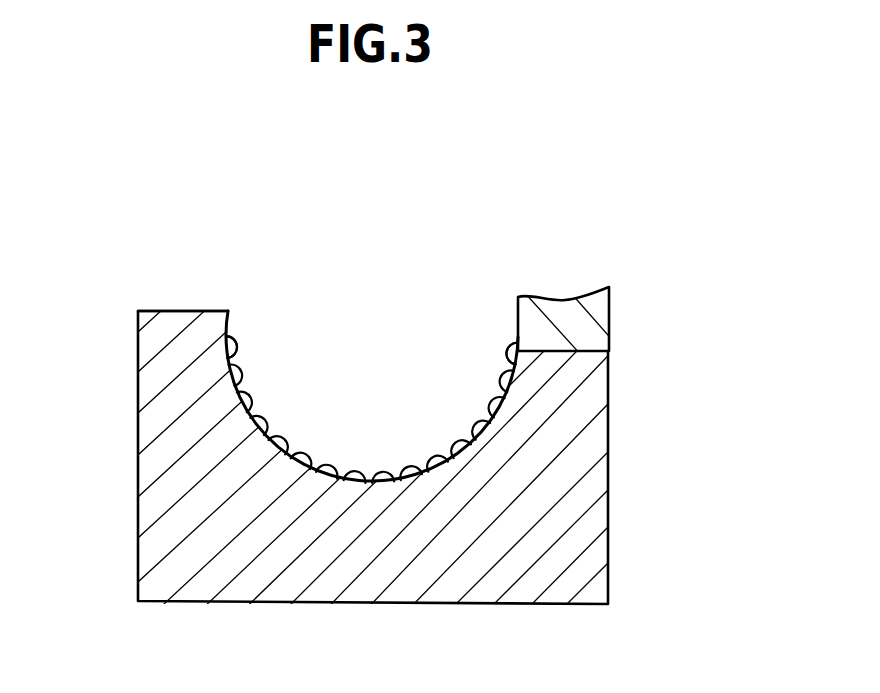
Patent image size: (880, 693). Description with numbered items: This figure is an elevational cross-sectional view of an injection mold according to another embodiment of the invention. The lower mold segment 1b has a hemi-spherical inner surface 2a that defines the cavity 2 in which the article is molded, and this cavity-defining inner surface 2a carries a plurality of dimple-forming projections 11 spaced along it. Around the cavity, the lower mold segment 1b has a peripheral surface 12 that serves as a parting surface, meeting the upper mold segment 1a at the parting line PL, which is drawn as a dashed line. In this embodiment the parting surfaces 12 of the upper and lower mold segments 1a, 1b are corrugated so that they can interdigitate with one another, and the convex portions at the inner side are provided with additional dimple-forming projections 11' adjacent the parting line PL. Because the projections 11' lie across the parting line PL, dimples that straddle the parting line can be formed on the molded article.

The upper mold segment 1a is at (593, 310).
The lower mold segment 1b is at (595, 475).
The cavity 2 is at (445, 389).
The hemi-spherical inner surface 2a is at (243, 385).
The dimple-forming projections 11 is at (372, 350).
The dimple-forming projections 11' is at (322, 279).
The parting surface 12 is at (183, 308).
The parting line PL is at (112, 333).